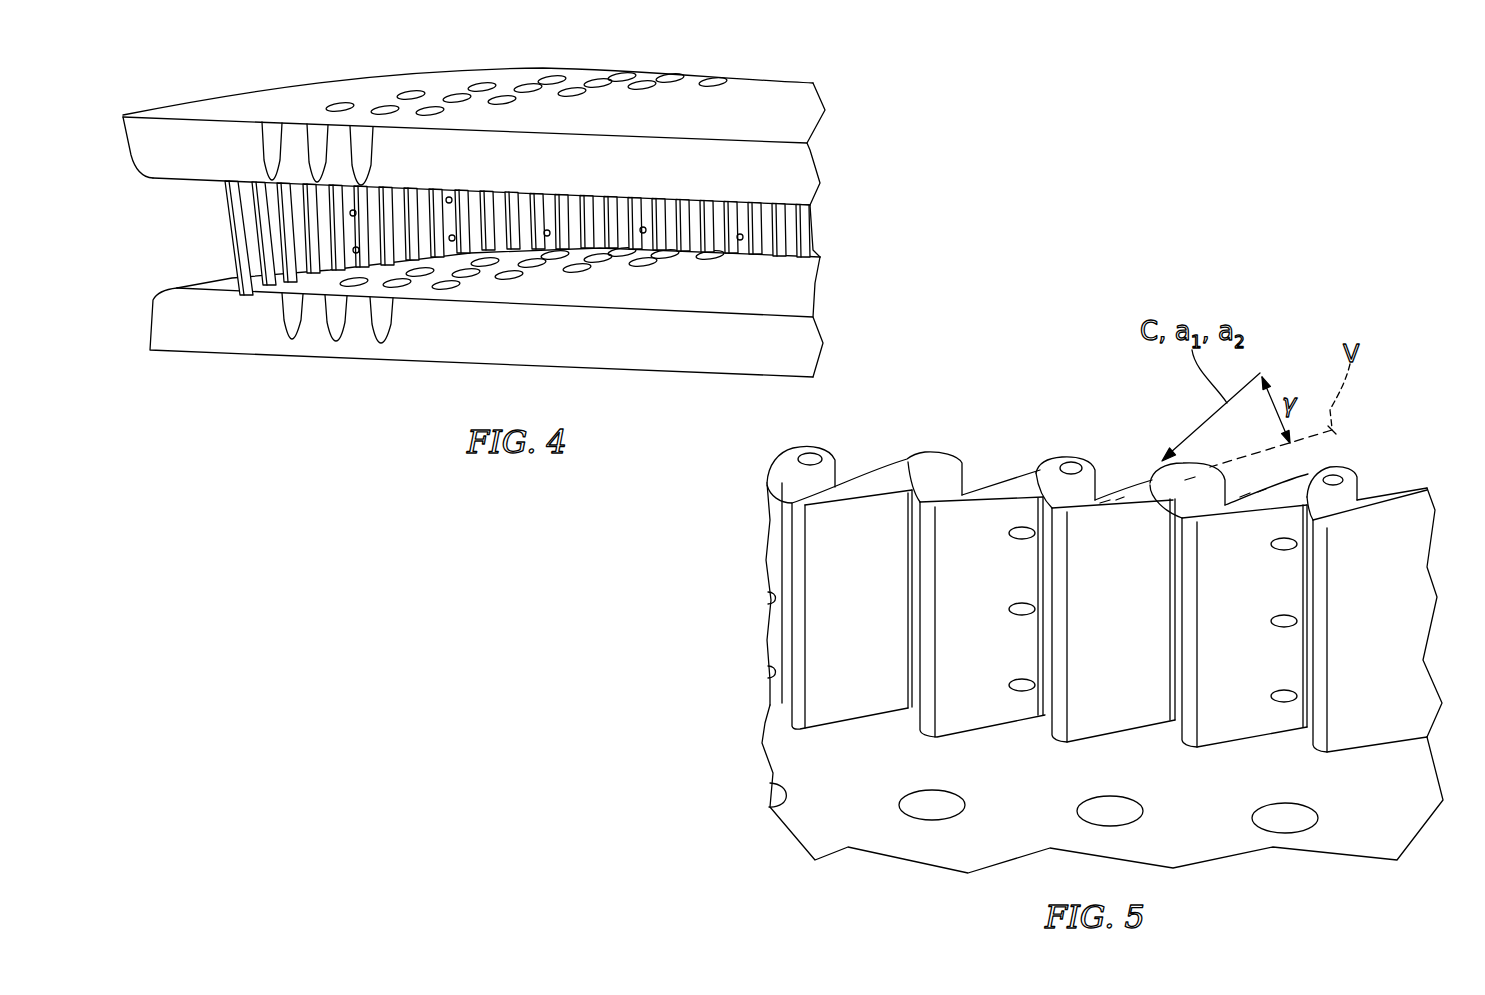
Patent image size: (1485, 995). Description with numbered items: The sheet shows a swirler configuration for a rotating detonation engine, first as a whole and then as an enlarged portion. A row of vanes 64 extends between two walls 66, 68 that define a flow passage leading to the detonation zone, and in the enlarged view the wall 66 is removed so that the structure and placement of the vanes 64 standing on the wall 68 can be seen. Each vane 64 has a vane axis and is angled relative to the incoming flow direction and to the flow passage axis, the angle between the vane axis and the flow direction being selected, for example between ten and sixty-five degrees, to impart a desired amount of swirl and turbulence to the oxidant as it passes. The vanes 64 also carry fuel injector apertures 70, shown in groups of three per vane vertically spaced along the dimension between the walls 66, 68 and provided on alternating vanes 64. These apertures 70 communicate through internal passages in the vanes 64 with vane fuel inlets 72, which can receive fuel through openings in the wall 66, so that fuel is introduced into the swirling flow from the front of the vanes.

In FIG. 4, the vanes 64 is at (785, 228).
In FIG. 5, the vanes 64 is at (1393, 497).
In FIG. 4, the wall 66 is at (802, 97).
In FIG. 4, the wall 68 is at (753, 297).
In FIG. 5, the wall 68 is at (822, 822).
In FIG. 5, the fuel injector apertures 70 is at (1022, 527).
In FIG. 5, the vane fuel inlets 72 is at (1071, 462).